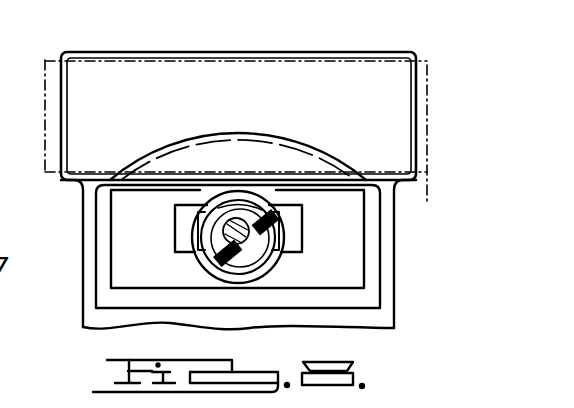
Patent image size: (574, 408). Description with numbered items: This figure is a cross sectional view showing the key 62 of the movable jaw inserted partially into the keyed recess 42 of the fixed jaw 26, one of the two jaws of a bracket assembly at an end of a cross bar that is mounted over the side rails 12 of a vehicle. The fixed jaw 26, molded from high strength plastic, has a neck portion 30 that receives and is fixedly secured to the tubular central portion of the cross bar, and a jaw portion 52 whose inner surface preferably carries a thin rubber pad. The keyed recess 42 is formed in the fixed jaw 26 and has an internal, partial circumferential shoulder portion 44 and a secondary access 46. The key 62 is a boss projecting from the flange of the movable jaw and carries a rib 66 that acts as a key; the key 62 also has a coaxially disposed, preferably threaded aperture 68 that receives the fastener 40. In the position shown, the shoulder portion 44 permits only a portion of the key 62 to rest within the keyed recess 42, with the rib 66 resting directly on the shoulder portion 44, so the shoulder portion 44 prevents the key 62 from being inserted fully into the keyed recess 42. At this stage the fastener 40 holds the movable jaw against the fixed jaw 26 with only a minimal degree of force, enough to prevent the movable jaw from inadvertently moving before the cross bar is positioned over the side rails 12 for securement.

The side rail 12 is at (425, 196).
The fixed jaw 26 is at (238, 90).
The neck portion 30 is at (384, 277).
The fastener 40 is at (275, 217).
The keyed recess 42 is at (176, 261).
The shoulder portion 44 is at (276, 254).
The secondary access 46 is at (278, 229).
The jaw portion 52 is at (349, 54).
The key 62 is at (222, 200).
The rib 66 is at (197, 232).
The aperture 68 is at (233, 224).